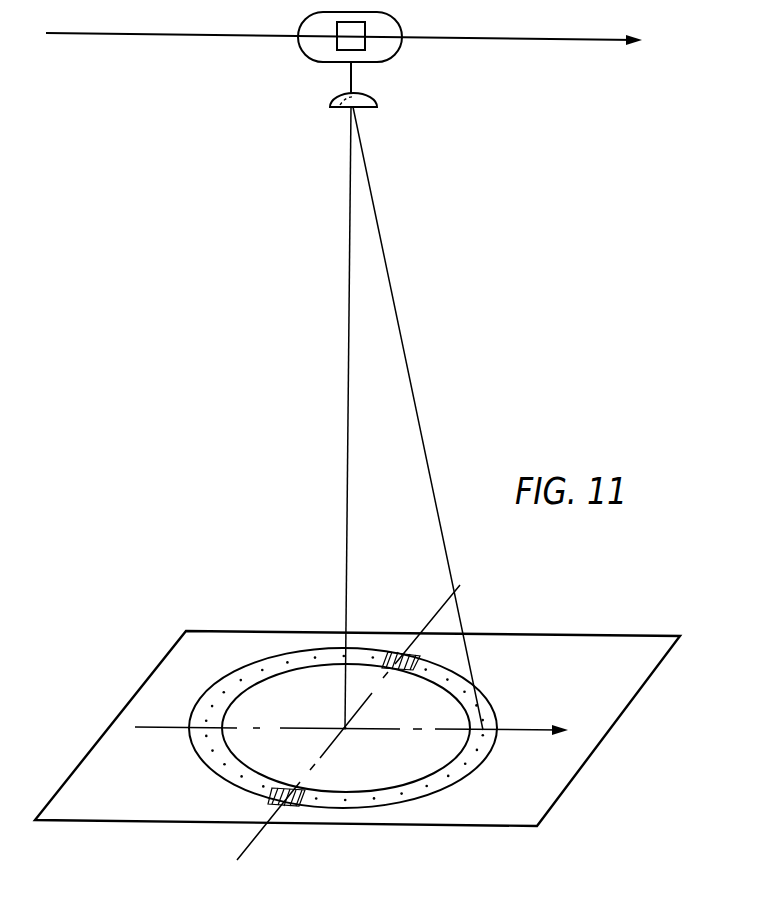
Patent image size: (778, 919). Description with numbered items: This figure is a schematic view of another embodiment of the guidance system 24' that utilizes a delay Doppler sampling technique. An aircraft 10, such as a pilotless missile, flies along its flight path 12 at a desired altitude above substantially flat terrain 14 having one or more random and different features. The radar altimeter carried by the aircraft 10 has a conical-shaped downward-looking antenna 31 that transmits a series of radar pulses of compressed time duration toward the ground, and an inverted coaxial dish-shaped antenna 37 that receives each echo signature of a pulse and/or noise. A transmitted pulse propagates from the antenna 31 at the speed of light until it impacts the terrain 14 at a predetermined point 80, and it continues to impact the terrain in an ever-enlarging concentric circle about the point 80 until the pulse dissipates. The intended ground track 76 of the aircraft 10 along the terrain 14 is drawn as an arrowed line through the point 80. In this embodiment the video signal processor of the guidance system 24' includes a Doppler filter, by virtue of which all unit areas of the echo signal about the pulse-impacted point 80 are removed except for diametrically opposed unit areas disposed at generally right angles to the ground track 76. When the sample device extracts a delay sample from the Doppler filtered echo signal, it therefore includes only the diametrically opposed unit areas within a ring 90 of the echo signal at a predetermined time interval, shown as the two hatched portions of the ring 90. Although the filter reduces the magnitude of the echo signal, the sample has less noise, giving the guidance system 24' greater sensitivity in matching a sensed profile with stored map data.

The aircraft 10 is at (294, 50).
The flight path 12 is at (575, 41).
The guidance system 24' is at (387, 50).
The inverted coaxial dish-shaped antenna 37 is at (377, 100).
The conical-shaped downward-looking antenna 31 is at (346, 97).
The terrain 14 is at (235, 631).
The ring 90 is at (497, 700).
The ground track 76 is at (167, 727).
The pulse-impacted ground point 80 is at (345, 729).